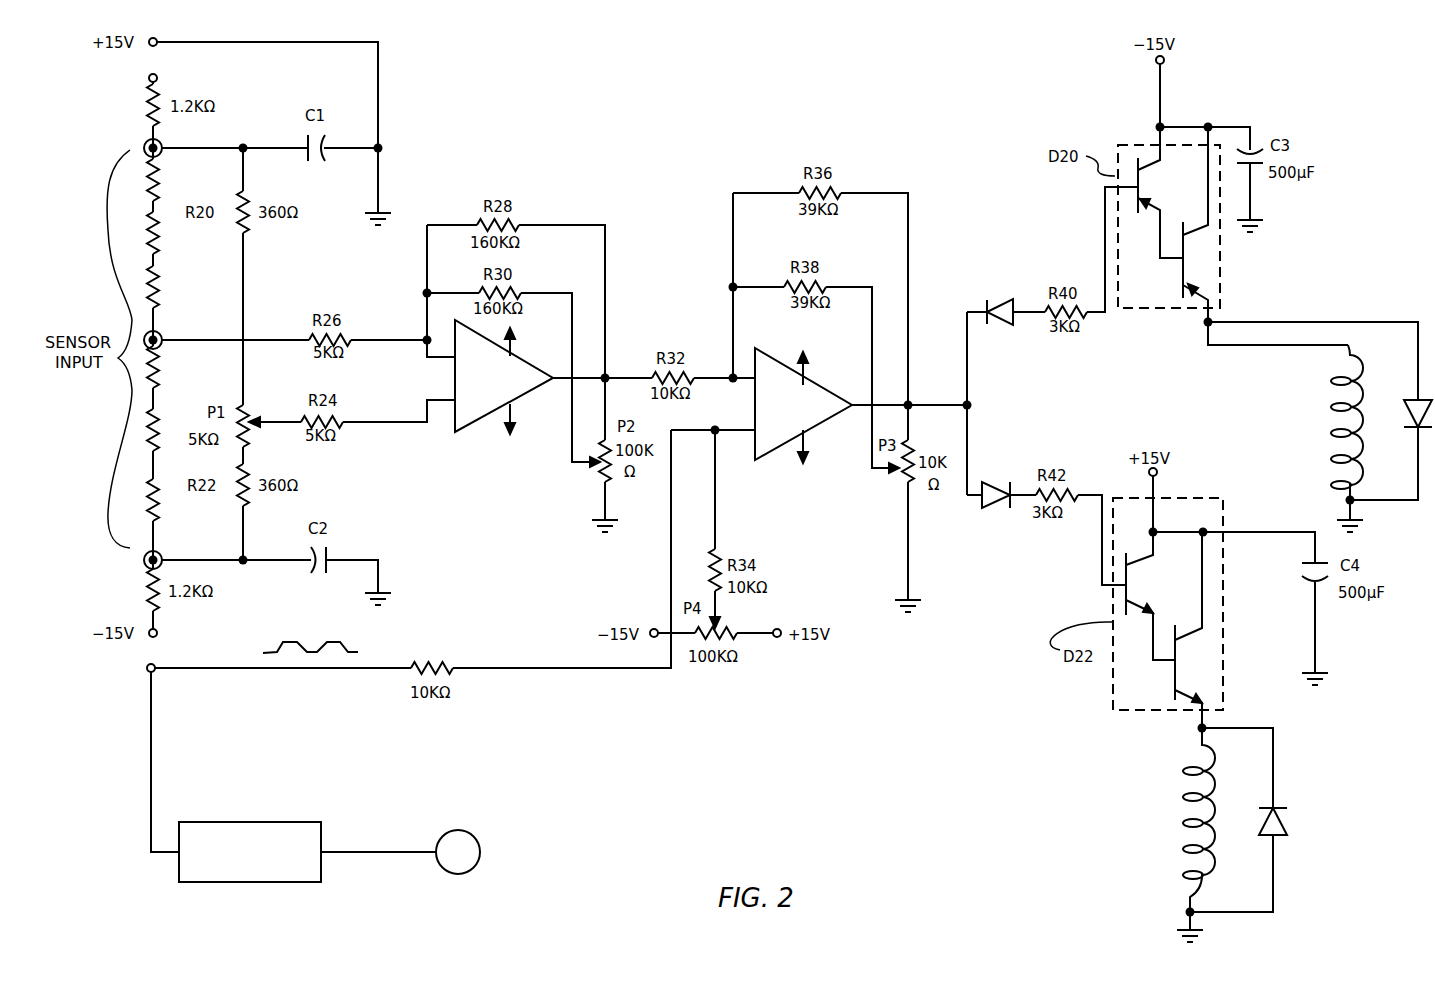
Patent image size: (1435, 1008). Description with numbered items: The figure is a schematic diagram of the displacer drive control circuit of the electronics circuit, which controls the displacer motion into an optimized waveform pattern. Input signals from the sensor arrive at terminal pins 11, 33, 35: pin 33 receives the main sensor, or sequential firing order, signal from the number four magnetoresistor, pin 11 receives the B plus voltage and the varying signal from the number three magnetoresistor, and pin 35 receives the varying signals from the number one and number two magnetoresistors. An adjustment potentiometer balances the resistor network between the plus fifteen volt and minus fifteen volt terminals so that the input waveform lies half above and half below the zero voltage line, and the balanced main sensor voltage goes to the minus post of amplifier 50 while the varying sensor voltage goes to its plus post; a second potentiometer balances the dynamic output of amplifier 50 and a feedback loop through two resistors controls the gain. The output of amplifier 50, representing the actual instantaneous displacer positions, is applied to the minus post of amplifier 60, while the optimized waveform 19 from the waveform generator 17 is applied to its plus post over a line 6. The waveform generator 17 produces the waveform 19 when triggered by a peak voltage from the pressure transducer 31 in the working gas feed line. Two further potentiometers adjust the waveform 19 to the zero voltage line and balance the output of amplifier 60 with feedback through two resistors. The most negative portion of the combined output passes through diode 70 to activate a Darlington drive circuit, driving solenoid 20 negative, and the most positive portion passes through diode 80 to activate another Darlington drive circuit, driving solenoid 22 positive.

The line 6 is at (393, 852).
The terminal pin 11 is at (158, 152).
The waveform generator 17 is at (321, 882).
The optimized waveform 19 is at (275, 645).
The solenoid 20 is at (1338, 444).
The solenoid 22 is at (1185, 897).
The pressure transducer 31 is at (463, 834).
The terminal pin 33 is at (158, 346).
The terminal pin 35 is at (158, 554).
The amplifier 50 is at (478, 428).
The amplifier 60 is at (778, 430).
The diode 70 is at (988, 300).
The diode 80 is at (1003, 510).